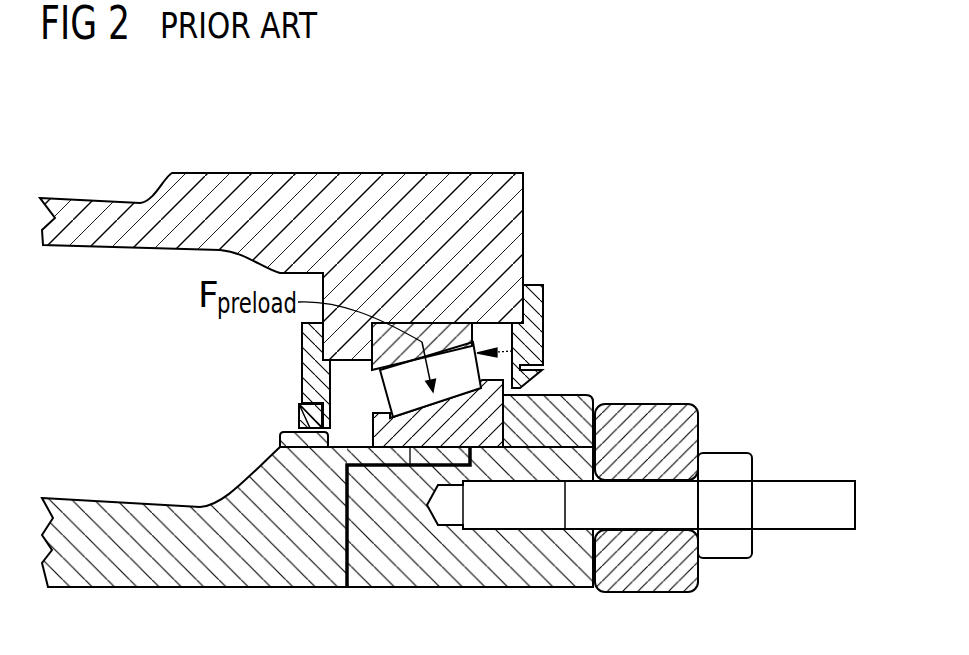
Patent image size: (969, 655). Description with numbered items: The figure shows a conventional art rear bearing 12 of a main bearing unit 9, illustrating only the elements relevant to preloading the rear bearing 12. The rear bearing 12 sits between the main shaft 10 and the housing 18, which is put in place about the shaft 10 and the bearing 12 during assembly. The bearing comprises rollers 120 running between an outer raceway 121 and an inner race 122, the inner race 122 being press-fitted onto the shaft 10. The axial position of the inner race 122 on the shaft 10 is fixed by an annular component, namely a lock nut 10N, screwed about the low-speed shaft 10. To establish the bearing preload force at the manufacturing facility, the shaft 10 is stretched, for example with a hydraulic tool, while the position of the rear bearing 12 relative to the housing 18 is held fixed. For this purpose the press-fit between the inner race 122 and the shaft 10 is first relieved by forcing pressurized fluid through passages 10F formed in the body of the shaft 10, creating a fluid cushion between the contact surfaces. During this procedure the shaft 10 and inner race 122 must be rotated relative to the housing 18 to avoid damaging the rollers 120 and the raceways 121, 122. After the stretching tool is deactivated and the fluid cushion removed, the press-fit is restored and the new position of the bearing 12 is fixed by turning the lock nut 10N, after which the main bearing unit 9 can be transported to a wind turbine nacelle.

The main bearing unit 9 is at (280, 124).
The main shaft 10 is at (145, 515).
The passages 10F is at (349, 550).
The lock nut 10N is at (588, 394).
The rear bearing 12 is at (508, 345).
The housing 18 is at (77, 203).
The bearing rollers 120 is at (397, 388).
The raceway 121 is at (460, 331).
The inner race 122 is at (370, 428).